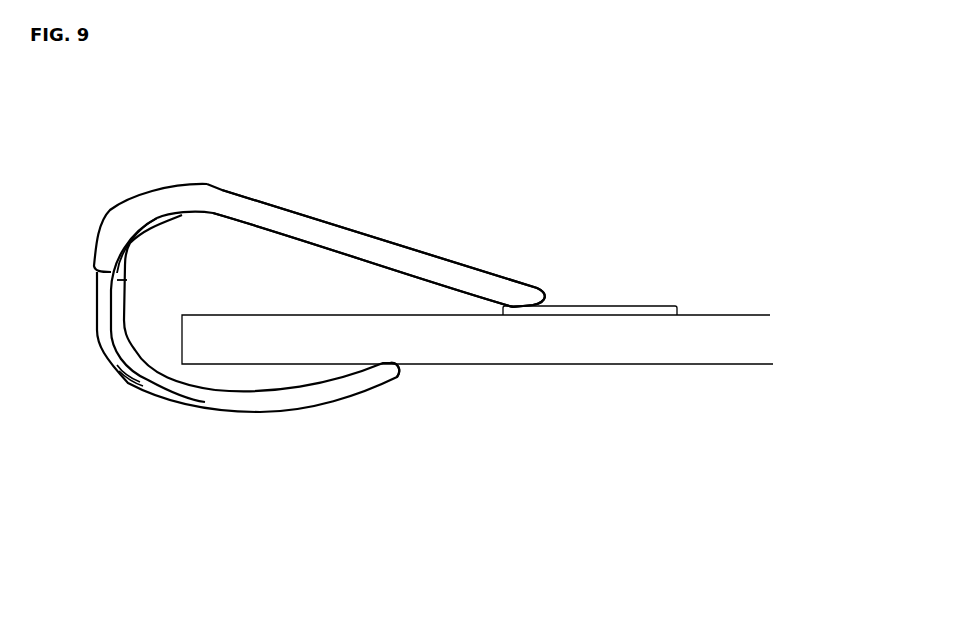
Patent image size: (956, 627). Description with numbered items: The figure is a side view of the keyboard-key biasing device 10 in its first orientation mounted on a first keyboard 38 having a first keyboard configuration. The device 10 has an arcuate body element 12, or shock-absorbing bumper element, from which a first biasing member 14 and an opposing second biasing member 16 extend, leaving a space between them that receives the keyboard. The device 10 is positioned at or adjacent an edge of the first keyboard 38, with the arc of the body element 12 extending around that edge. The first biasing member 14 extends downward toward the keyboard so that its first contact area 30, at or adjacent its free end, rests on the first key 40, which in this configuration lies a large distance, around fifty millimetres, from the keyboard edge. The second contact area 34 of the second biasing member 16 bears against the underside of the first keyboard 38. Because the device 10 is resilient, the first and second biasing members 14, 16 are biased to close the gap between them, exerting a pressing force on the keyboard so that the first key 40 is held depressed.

The keyboard-key biasing device 10 is at (341, 216).
The body element 12 is at (82, 292).
The first biasing member 14 is at (442, 255).
The second biasing member 16 is at (267, 416).
The first contact area 30 is at (538, 320).
The second contact area 34 is at (404, 370).
The first keyboard 38 is at (690, 345).
The first key 40 is at (597, 301).